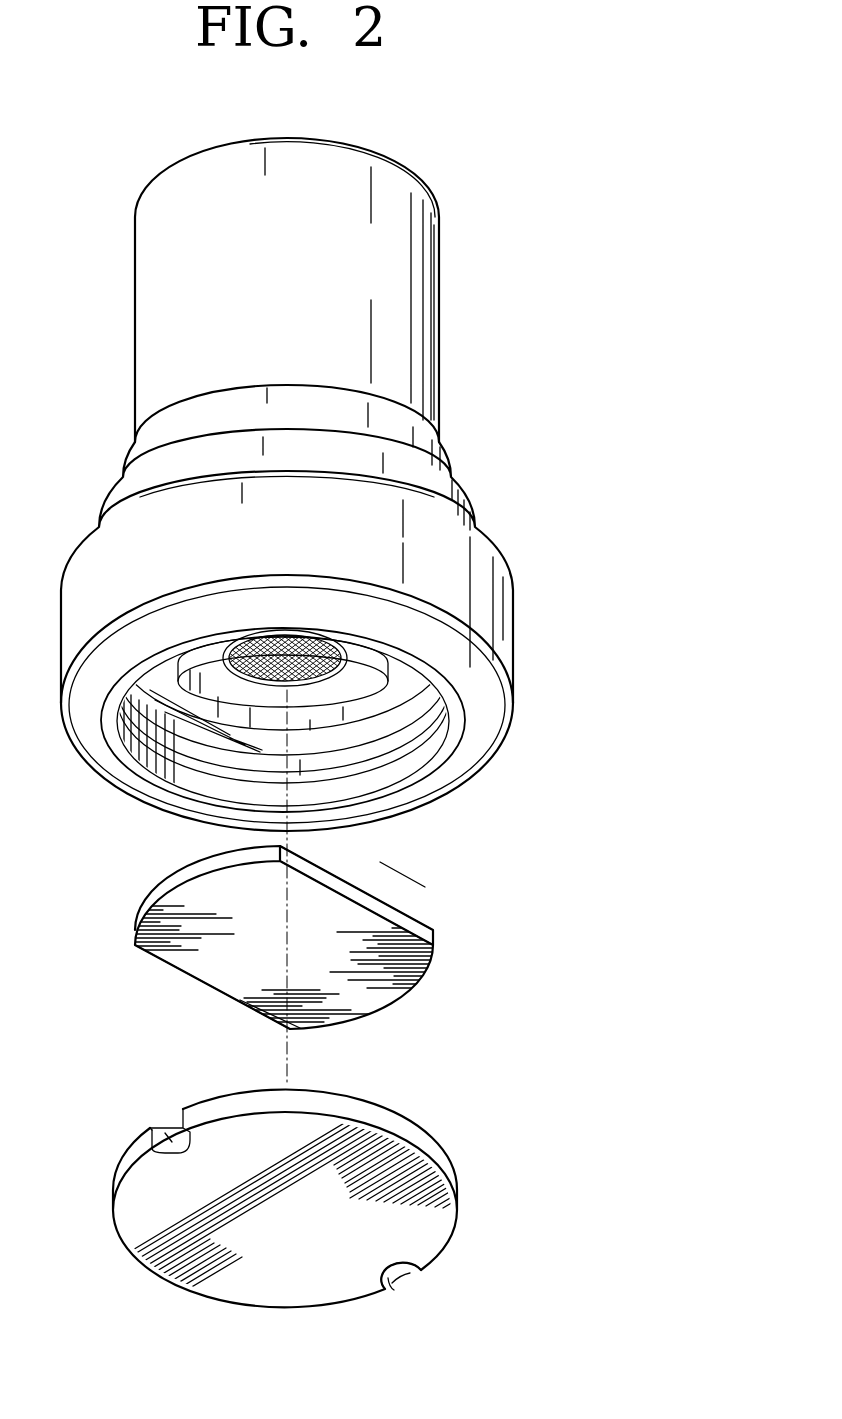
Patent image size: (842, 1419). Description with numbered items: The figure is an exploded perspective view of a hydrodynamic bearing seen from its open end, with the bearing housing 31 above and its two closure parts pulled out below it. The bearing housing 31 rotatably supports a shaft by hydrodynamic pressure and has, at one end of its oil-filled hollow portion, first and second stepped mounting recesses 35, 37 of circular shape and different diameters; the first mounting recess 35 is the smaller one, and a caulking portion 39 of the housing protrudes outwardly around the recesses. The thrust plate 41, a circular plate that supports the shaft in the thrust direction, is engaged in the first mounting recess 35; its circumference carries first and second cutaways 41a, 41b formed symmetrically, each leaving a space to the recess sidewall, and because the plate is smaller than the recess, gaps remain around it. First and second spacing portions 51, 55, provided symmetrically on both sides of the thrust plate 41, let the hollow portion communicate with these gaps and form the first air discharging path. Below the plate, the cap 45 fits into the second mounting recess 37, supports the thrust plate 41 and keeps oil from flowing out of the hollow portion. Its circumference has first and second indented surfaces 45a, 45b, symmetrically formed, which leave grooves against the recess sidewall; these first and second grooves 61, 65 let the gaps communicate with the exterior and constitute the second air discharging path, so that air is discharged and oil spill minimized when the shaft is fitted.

The bearing housing 31 is at (437, 342).
The first mounting recess 35 is at (397, 710).
The second mounting recess 37 is at (435, 720).
The caulking portion 39 is at (150, 792).
The thrust plate 41 is at (403, 992).
The first cutaway 41a is at (413, 930).
The second cutaway 41b is at (208, 978).
The cap 45 is at (440, 1155).
The first indented surface 45a is at (172, 1142).
The second indented surface 45b is at (388, 1275).
The first spacing portion 51 is at (410, 892).
The second spacing portion 55 is at (239, 1037).
The first groove 61 is at (178, 1115).
The second groove 65 is at (410, 1278).